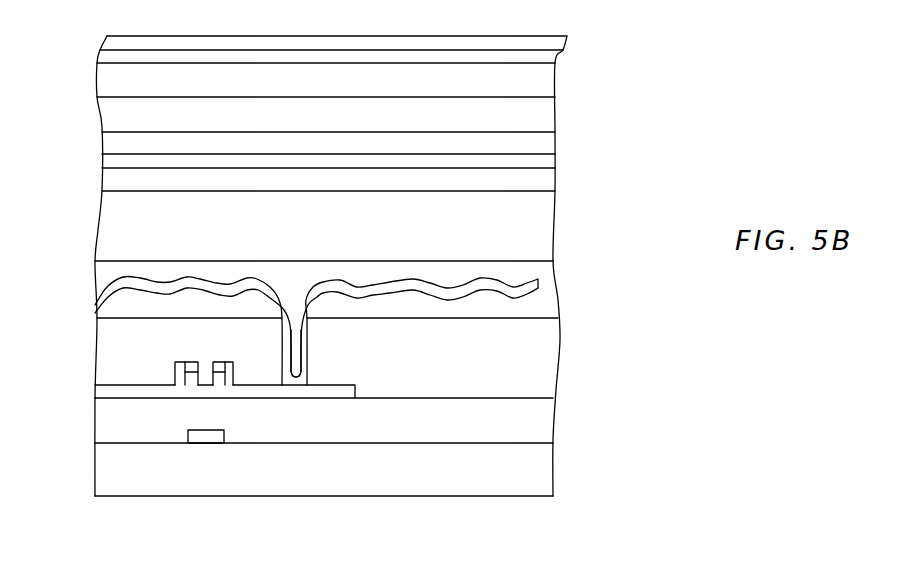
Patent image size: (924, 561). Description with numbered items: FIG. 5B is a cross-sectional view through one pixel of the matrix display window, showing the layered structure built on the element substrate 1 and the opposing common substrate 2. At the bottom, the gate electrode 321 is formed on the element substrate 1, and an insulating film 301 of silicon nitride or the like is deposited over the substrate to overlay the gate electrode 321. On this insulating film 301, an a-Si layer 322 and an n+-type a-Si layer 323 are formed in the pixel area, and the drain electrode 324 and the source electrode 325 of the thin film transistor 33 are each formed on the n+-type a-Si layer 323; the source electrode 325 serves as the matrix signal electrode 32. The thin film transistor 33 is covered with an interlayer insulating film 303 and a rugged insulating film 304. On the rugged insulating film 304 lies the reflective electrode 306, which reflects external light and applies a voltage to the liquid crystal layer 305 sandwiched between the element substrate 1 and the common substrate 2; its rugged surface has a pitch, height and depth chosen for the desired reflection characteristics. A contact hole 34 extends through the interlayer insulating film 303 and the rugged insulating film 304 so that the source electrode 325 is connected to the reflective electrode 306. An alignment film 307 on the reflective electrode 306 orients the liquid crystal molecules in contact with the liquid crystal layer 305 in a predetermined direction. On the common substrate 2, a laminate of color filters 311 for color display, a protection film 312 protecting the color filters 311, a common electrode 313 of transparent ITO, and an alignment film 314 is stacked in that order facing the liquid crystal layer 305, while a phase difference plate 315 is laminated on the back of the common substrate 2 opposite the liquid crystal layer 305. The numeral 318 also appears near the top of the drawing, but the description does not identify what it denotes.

The element substrate 1 is at (540, 472).
The common substrate 2 is at (540, 87).
The matrix signal electrode 32 is at (374, 6).
The thin film transistor 33 is at (215, 362).
The contact hole 34 is at (523, 515).
The insulating film 301 is at (528, 418).
The interlayer insulating film 303 is at (513, 363).
The rugged insulating film 304 is at (542, 307).
The liquid crystal layer 305 is at (533, 226).
The reflective electrode 306 is at (540, 288).
The alignment film 307 is at (545, 268).
The color filters 311 is at (540, 112).
The protection film 312 is at (543, 145).
The common electrode 313 is at (548, 162).
The alignment film 314 is at (543, 182).
The phase difference plate 315 is at (553, 62).
The cover glass 318 is at (530, 38).
The gate electrode 321 is at (197, 437).
The a-Si layer 322 is at (192, 397).
The n+-type a-Si layer 323 is at (160, 361).
The drain electrode 324 is at (143, 385).
The source electrode 325 is at (262, 400).